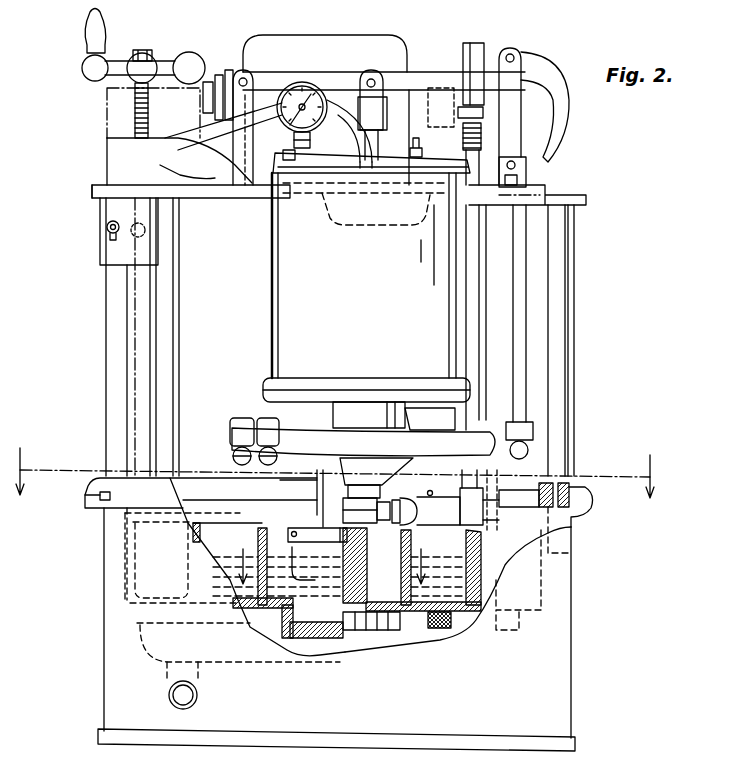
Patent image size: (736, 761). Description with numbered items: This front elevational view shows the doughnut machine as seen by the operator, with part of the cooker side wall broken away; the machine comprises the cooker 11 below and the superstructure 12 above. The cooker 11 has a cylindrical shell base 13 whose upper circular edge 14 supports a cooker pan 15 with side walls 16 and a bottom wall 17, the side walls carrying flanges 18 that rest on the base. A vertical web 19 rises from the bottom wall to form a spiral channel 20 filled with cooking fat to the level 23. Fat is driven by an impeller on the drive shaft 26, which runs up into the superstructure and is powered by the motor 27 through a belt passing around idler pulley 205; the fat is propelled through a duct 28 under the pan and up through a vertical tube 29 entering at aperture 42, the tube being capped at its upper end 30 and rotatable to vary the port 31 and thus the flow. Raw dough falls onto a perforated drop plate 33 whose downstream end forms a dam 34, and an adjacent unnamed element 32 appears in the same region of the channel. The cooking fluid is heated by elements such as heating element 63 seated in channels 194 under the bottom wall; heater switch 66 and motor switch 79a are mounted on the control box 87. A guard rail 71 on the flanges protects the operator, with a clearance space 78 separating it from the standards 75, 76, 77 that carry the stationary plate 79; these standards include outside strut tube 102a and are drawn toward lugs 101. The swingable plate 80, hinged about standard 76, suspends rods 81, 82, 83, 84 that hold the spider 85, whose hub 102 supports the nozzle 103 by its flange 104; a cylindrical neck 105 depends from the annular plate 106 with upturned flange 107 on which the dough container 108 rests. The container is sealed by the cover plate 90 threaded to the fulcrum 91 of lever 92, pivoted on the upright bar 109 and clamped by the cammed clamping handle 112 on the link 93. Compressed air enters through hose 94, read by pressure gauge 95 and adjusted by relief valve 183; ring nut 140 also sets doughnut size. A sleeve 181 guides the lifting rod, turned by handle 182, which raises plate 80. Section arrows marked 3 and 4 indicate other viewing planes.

The section line 3- 3 is at (333, 464).
The view arrows 4 is at (329, 556).
The cooker 11 is at (635, 625).
The superstructure 12 is at (658, 326).
The base 13 is at (568, 688).
The upper circular edge 14 is at (100, 506).
The cooker pan 15 is at (140, 607).
The side walls 16 is at (556, 580).
The bottom wall 17 is at (387, 632).
The flanges 18 is at (92, 493).
The vertical web 19 is at (478, 547).
The spirally-shaped channel 20 is at (215, 524).
The fat level 23 is at (490, 560).
The drive shaft 26 is at (180, 372).
The motor 27 is at (374, 54).
The duct 28 is at (155, 650).
The vertical tube 29 is at (351, 542).
The upper end 30 is at (292, 527).
The port 31 is at (295, 560).
The valve body 32 is at (390, 631).
The drop plate 33 is at (376, 632).
The dam 34 is at (358, 632).
The aperture 42 is at (326, 612).
The heating element 63 is at (446, 629).
The heater switch 66 is at (150, 232).
The guard rail 71 is at (590, 490).
The standard 75 is at (107, 318).
The standard 76 is at (158, 418).
The standard 77 is at (573, 401).
The clearance space 78 is at (560, 490).
The stationary horizontal plate 79 is at (586, 207).
The motor switch 79a is at (106, 228).
The swingable horizontal plate 80 is at (546, 199).
The rod 81 is at (486, 324).
The rod 82 is at (495, 343).
The rod 83 is at (230, 426).
The rod 84 is at (237, 321).
The spider 85 is at (428, 436).
The control box 87 is at (100, 250).
The cover plate 90 is at (357, 223).
The fulcrum 91 is at (380, 70).
The lever 92 is at (368, 207).
The link 93 is at (515, 122).
The hose 94 is at (345, 134).
The pressure gauge 95 is at (304, 82).
The lugs 101 is at (540, 513).
The hub 102 is at (350, 436).
The outside strut tube 102a is at (106, 389).
The nozzle 103 is at (412, 460).
The flange 104 is at (390, 426).
The cylindrical neck 105 is at (334, 408).
The annular plate 106 is at (290, 465).
The flange 107 is at (383, 376).
The dough container 108 is at (452, 293).
The upright bar 109 is at (233, 80).
The clamping handle 112 is at (566, 130).
The ring nut 140 is at (505, 108).
The sleeve 181 is at (128, 55).
The handle 182 is at (86, 22).
The relief valve 183 is at (364, 215).
The channels 194 is at (440, 630).
The idler pulley 205 is at (207, 82).